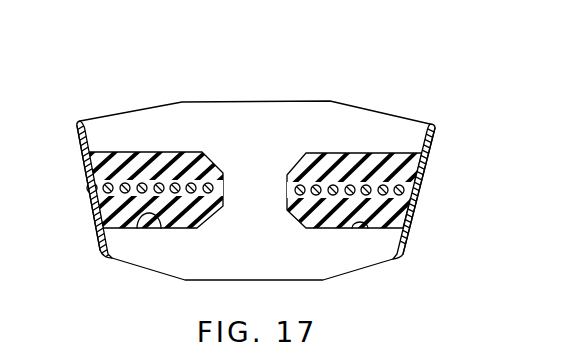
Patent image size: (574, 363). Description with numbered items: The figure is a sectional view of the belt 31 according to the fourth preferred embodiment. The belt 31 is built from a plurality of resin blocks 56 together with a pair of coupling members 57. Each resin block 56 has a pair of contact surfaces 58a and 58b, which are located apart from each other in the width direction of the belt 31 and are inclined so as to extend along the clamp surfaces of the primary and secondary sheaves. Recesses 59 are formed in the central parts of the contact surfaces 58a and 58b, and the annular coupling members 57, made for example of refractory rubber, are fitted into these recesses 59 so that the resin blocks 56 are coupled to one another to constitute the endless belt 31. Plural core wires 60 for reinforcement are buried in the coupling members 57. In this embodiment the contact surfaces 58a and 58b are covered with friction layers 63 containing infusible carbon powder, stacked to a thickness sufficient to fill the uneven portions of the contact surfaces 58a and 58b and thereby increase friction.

The belt 31 is at (255, 160).
The resin block 56 is at (325, 113).
The coupling member 57 is at (97, 170).
The contact surface 58a is at (412, 236).
The contact surface 58b is at (77, 133).
The recess 59 is at (136, 228).
The core wire 60 is at (190, 184).
The friction layer 63 is at (97, 233).